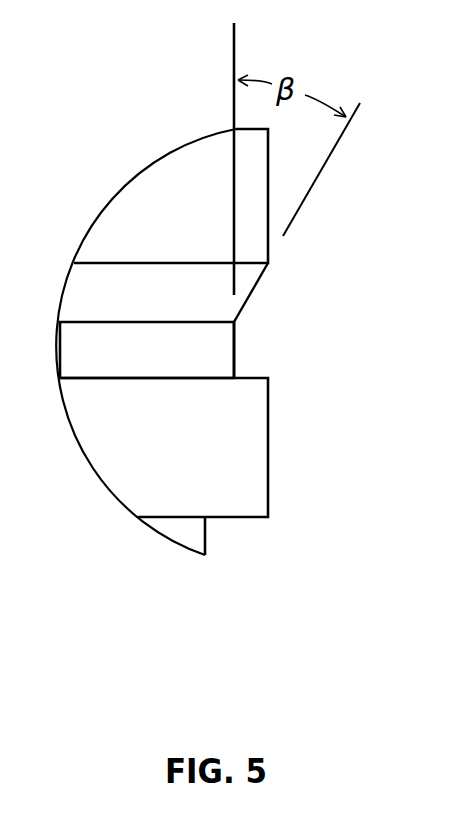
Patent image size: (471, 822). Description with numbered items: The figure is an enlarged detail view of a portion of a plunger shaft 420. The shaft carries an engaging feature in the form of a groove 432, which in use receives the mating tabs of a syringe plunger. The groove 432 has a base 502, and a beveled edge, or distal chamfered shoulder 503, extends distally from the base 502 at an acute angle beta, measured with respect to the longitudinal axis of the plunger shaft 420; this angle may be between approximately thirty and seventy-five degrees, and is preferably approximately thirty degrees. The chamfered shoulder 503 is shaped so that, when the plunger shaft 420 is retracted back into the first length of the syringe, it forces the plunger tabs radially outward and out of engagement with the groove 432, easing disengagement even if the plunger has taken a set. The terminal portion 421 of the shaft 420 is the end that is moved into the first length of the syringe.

The plunger shaft 420 is at (287, 531).
The terminal portion of shaft 421 is at (176, 189).
The groove 432 is at (296, 354).
The base of groove 502 is at (238, 348).
The distal chamfered shoulder 503 is at (254, 285).